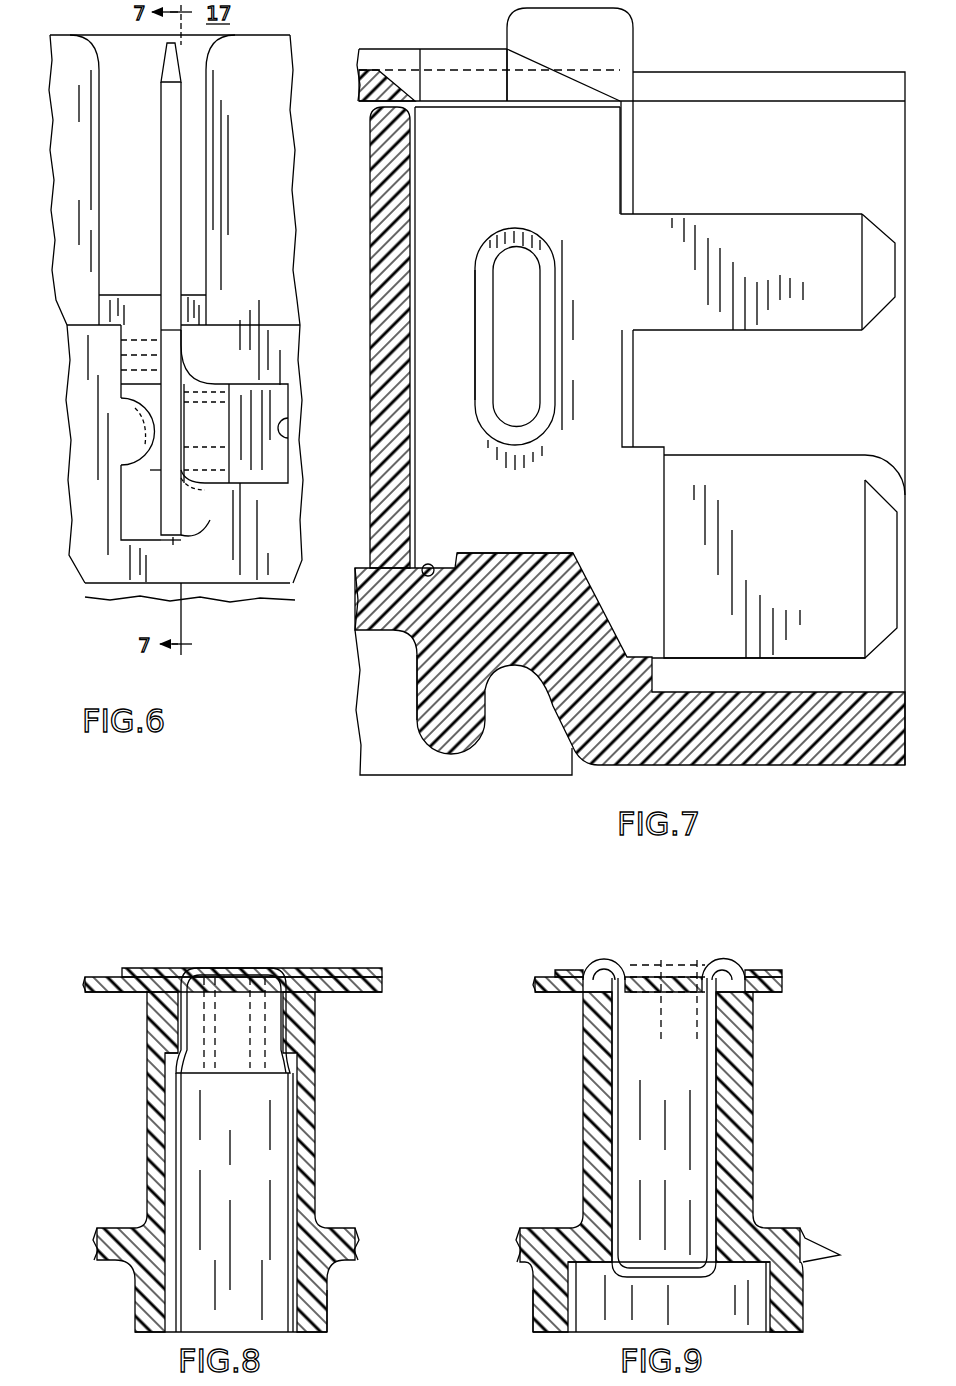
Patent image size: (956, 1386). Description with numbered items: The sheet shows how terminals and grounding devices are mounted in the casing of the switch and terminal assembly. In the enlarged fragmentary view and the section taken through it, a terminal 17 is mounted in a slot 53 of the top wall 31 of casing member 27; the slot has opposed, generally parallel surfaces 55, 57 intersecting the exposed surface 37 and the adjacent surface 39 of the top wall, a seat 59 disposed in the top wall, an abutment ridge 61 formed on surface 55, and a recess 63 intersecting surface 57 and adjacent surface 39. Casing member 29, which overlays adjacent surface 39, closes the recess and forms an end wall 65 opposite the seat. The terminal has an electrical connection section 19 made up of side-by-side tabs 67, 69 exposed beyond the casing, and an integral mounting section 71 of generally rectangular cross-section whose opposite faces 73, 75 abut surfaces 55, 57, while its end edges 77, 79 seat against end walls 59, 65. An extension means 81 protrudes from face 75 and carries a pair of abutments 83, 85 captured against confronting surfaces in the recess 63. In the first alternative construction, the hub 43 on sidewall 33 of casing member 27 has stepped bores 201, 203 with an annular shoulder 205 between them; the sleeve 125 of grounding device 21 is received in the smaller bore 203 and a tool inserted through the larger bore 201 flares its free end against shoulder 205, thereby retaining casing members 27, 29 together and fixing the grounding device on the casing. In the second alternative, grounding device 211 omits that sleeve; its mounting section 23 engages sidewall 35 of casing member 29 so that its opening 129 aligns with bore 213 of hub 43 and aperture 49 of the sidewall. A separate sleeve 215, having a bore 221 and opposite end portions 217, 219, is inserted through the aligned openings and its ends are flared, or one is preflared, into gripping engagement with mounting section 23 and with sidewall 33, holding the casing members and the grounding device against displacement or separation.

In FIG. 6, the terminal 17 is at (176, 309).
In FIG. 7, the terminal 17 is at (736, 205).
In FIG. 6, the electrical connection section 19 is at (166, 162).
In FIG. 7, the electrical connection section 19 is at (776, 336).
In FIG. 8, the grounding device 21 is at (320, 952).
In FIG. 8, the mounting section 23 is at (359, 969).
In FIG. 9, the mounting section 23 is at (784, 972).
In FIG. 7, the casing member 27 is at (413, 738).
In FIG. 8, the casing member 27 is at (331, 1265).
In FIG. 9, the casing member 27 is at (528, 1270).
In FIG. 7, the casing member 29 is at (722, 64).
In FIG. 8, the casing member 29 is at (382, 987).
In FIG. 9, the casing member 29 is at (784, 986).
In FIG. 6, the top wall 31 is at (197, 310).
In FIG. 7, the top wall 31 is at (654, 666).
In FIG. 7, the sidewall 33 is at (606, 758).
In FIG. 8, the sidewall 33 is at (350, 1245).
In FIG. 9, the sidewall 33 is at (520, 1245).
In FIG. 7, the sidewall 35 is at (800, 88).
In FIG. 8, the sidewall 35 is at (101, 977).
In FIG. 9, the sidewall 35 is at (543, 977).
In FIG. 6, the exposed surface 37 is at (78, 325).
In FIG. 7, the exposed surface 37 is at (636, 106).
In FIG. 6, the adjacent surface 39 is at (78, 360).
In FIG. 7, the adjacent surface 39 is at (394, 102).
In FIG. 8, the hub 43 is at (147, 1186).
In FIG. 9, the hub 43 is at (583, 1176).
In FIG. 8, the aperture 49 is at (189, 974).
In FIG. 9, the aperture 49 is at (597, 995).
In FIG. 6, the slot 53 is at (100, 544).
In FIG. 6, the surface 55 is at (64, 361).
In FIG. 6, the surface 57 is at (188, 358).
In FIG. 6, the seat 59 is at (145, 392).
In FIG. 7, the seat 59 is at (493, 567).
In FIG. 6, the abutment ridge 61 is at (150, 430).
In FIG. 6, the recess 63 is at (280, 428).
In FIG. 7, the end wall 65 is at (448, 108).
In FIG. 7, the tab 67 is at (823, 232).
In FIG. 7, the tab 69 is at (813, 495).
In FIG. 6, the mounting section 71 is at (155, 471).
In FIG. 7, the mounting section 71 is at (525, 169).
In FIG. 6, the face 73 is at (207, 530).
In FIG. 6, the face 75 is at (191, 547).
In FIG. 7, the face 75 is at (607, 160).
In FIG. 7, the end edge 77 is at (432, 565).
In FIG. 6, the end edge 79 is at (173, 537).
In FIG. 7, the end edge 79 is at (480, 108).
In FIG. 6, the extension means 81 is at (217, 433).
In FIG. 7, the extension means 81 is at (532, 245).
In FIG. 6, the abutment 83 is at (215, 385).
In FIG. 7, the abutment 83 is at (549, 311).
In FIG. 6, the abutment 85 is at (230, 497).
In FIG. 7, the abutment 85 is at (483, 339).
In FIG. 8, the sleeve 125 is at (198, 1072).
In FIG. 8, the opening 129 is at (267, 972).
In FIG. 9, the opening 129 is at (603, 963).
In FIG. 8, the stepped bore 201 is at (155, 1145).
In FIG. 8, the stepped bore 203 is at (306, 1016).
In FIG. 8, the annular shoulder 205 is at (170, 1041).
In FIG. 9, the grounding device 211 is at (768, 951).
In FIG. 9, the bore 213 is at (753, 1097).
In FIG. 9, the sleeve 215 is at (728, 1081).
In FIG. 9, the end portion 217 is at (728, 962).
In FIG. 9, the end portion 219 is at (727, 1283).
In FIG. 9, the bore 221 is at (708, 1043).